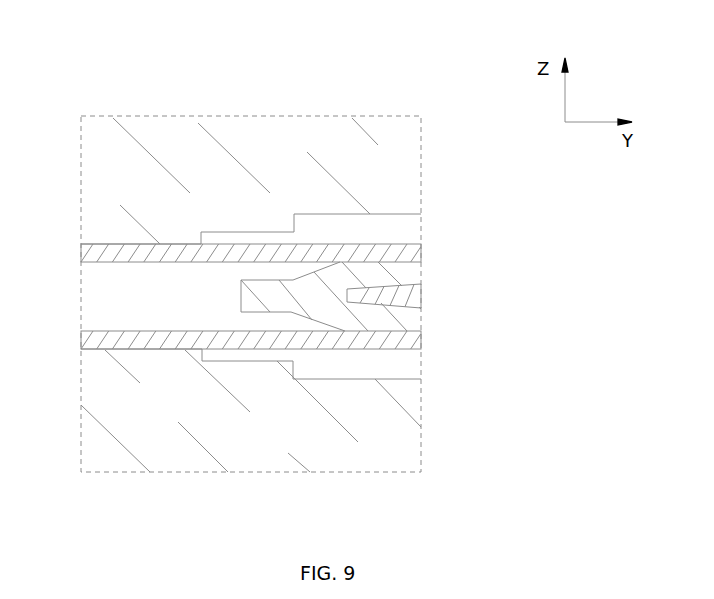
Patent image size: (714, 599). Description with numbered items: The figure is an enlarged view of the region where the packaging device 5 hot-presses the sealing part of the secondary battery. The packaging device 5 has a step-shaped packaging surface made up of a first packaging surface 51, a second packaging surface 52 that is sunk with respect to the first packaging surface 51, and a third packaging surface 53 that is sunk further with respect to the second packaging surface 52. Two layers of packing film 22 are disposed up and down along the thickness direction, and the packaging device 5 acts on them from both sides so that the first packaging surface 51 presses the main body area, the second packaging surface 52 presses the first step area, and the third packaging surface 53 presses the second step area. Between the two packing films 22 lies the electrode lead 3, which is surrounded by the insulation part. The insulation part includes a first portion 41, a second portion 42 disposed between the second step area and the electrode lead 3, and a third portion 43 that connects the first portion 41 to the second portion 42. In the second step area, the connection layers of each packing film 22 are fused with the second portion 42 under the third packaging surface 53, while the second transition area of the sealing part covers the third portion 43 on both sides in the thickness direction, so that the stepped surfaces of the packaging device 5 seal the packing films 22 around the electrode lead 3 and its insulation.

The packaging device 5 is at (150, 127).
The first packaging surface 51 is at (140, 245).
The second packaging surface 52 is at (249, 232).
The third packaging surface 53 is at (358, 216).
The packing film 22 is at (83, 255).
The first portion 41 is at (247, 300).
The second portion 42 is at (412, 272).
The third portion 43 is at (323, 277).
The electrode lead 3 is at (415, 297).